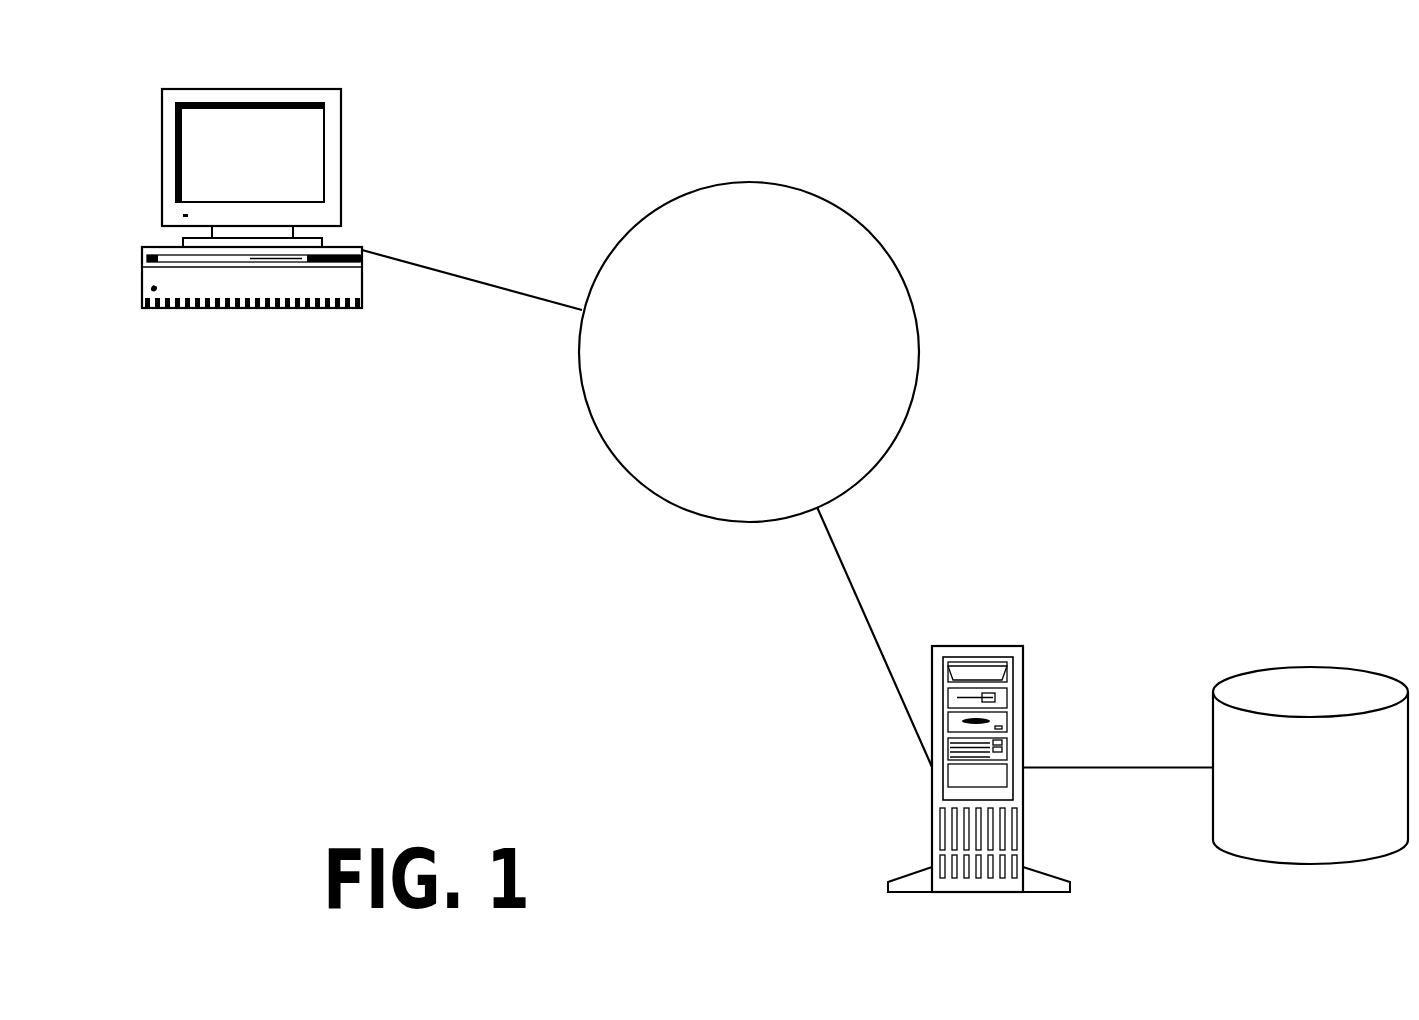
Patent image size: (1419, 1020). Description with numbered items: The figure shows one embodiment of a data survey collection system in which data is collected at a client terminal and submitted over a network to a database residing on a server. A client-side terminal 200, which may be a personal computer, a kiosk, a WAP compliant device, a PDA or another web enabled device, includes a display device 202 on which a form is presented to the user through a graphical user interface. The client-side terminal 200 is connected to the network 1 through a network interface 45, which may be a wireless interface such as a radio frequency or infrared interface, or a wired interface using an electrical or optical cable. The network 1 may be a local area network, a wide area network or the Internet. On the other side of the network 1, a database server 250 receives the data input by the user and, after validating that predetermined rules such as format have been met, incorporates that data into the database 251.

The network 1 is at (757, 386).
The network interface 45 is at (503, 312).
The client-side terminal 200 is at (310, 197).
The display device 202 is at (295, 150).
The database server 250 is at (1005, 930).
The database 251 is at (1338, 794).